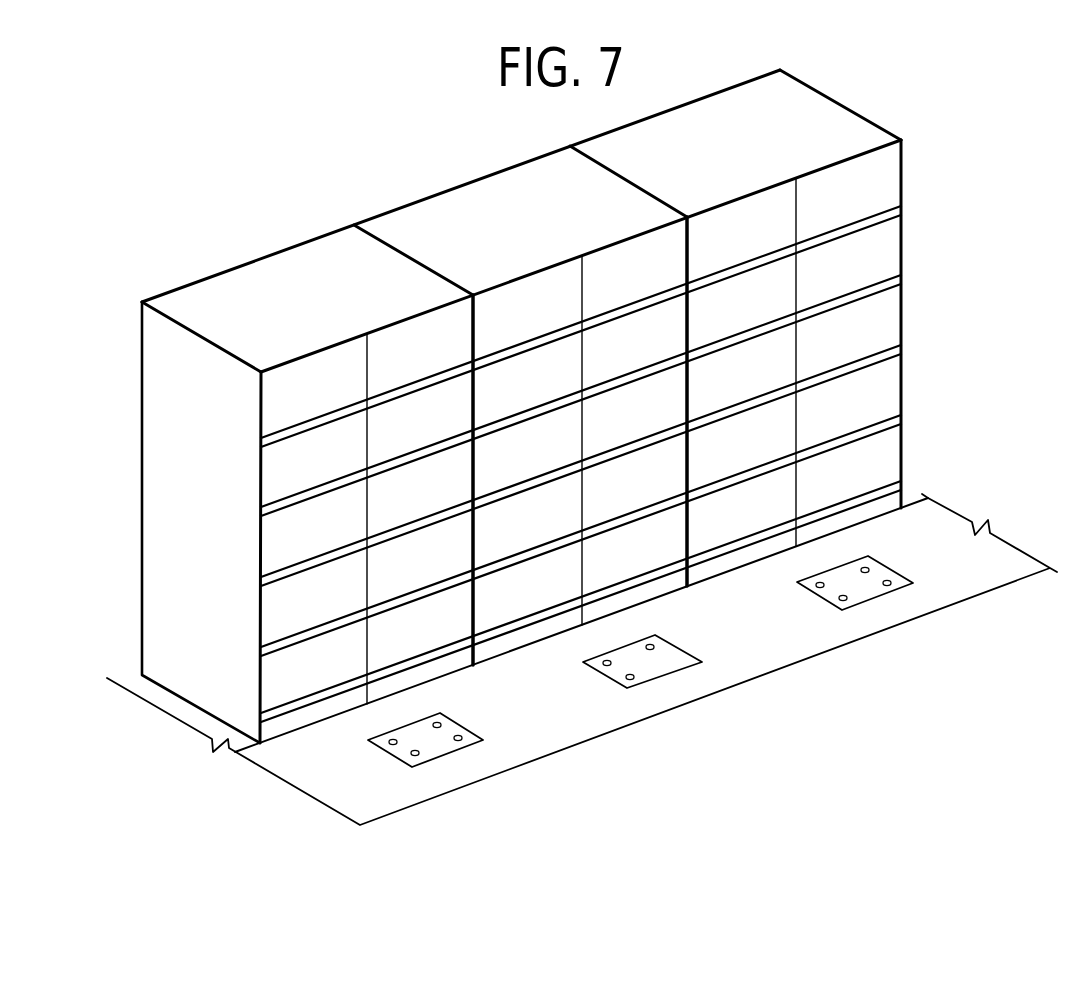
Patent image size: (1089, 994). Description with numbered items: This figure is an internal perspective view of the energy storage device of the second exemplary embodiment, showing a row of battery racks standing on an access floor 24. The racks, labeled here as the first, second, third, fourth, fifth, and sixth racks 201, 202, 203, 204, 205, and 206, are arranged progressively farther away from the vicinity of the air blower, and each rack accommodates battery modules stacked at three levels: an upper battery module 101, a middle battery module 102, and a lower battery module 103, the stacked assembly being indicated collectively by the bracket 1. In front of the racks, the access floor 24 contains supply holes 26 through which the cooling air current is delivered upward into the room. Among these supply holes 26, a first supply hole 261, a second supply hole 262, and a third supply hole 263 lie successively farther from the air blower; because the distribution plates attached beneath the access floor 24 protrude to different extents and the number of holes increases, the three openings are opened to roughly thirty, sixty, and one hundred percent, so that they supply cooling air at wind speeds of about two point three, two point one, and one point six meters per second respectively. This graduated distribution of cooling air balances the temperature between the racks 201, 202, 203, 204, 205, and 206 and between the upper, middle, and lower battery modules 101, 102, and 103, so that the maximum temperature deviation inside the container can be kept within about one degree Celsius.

The storage rack system 1 is at (73, 383).
The upper battery module 101 is at (306, 398).
The middle battery module 102 is at (303, 545).
The lower battery module 103 is at (307, 678).
The first rack 201 is at (862, 288).
The second rack 202 is at (797, 317).
The third rack 203 is at (644, 368).
The fourth rack 204 is at (537, 407).
The fifth rack 205 is at (431, 447).
The sixth rack 206 is at (344, 474).
The access floor 24 is at (988, 577).
The supply holes 26 is at (958, 680).
The first supply hole 261 is at (855, 587).
The second supply hole 262 is at (672, 660).
The third supply hole 263 is at (470, 727).